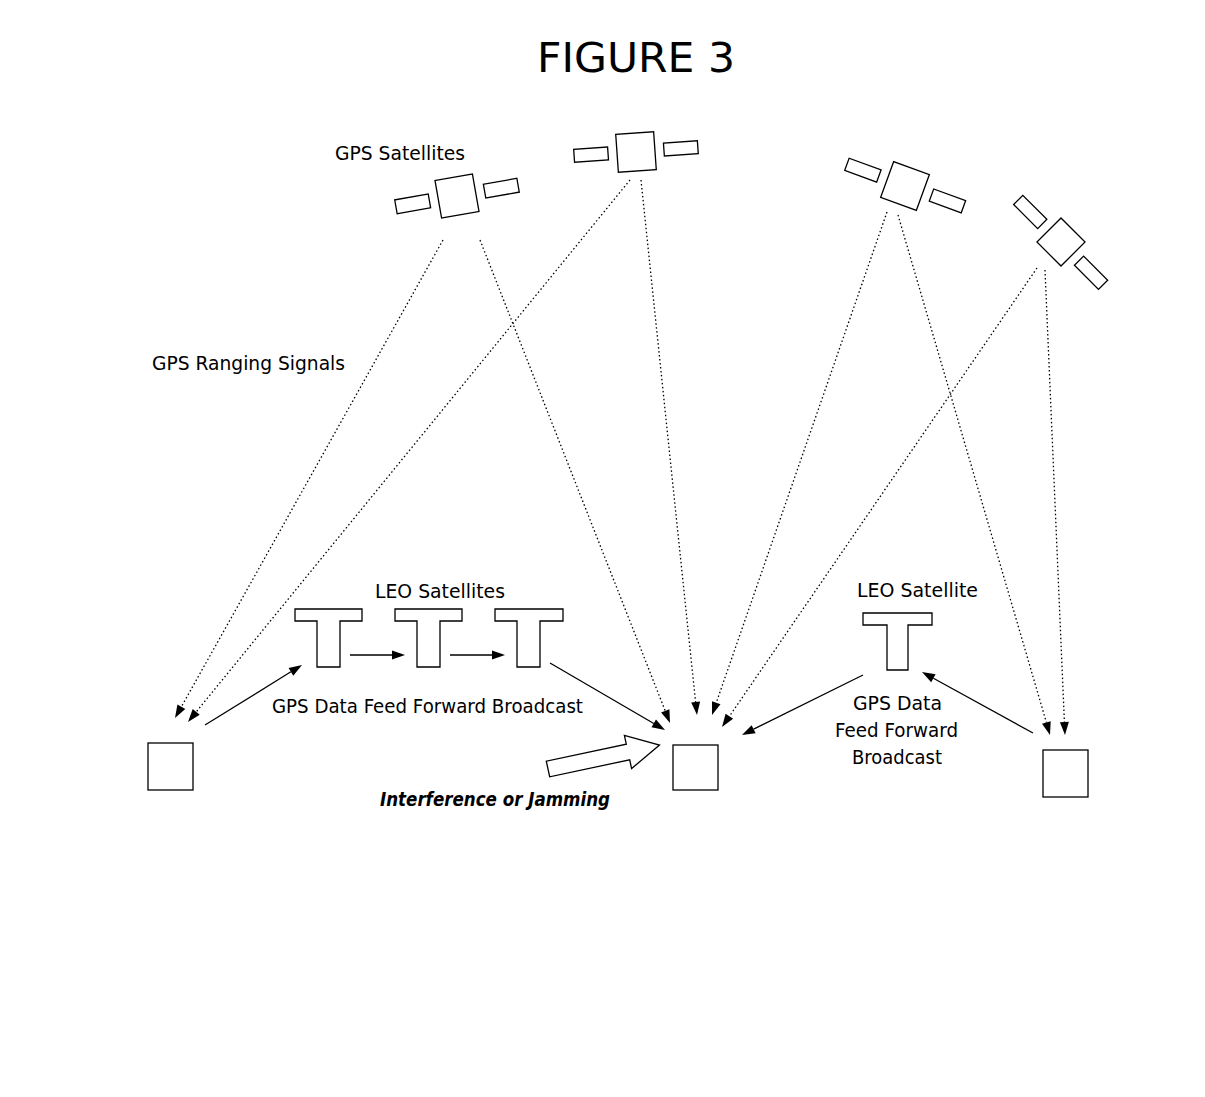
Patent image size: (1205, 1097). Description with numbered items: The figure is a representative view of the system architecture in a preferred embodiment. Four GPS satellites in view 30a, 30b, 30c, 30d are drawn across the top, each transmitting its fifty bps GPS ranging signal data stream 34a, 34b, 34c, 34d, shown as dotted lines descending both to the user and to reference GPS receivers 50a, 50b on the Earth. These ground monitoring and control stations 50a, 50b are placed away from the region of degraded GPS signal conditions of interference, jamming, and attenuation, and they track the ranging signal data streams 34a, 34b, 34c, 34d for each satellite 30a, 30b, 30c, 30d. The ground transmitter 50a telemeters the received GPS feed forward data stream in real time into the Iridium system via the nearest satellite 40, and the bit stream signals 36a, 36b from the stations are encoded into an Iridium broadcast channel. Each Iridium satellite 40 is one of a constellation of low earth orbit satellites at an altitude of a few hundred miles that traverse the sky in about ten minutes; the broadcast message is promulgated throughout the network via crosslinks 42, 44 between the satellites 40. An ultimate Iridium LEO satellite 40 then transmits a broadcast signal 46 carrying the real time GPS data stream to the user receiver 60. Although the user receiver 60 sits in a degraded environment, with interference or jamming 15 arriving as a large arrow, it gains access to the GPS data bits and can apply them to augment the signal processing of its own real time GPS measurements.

The interference 15 is at (548, 769).
The GPS satellite 30a is at (398, 205).
The GPS satellite 30b is at (575, 158).
The GPS satellite 30c is at (848, 172).
The GPS satellite 30d is at (1035, 248).
The GPS ranging signal data stream 34a is at (273, 530).
The GPS ranging signal data stream 34b is at (658, 405).
The GPS ranging signal data stream 34c is at (802, 450).
The GPS ranging signal data stream 34d is at (912, 443).
The bit stream signal 36a is at (245, 700).
The bit stream signal 36b is at (805, 718).
The Iridium satellite 40 is at (540, 614).
The crosslink 42 is at (401, 650).
The crosslink 44 is at (503, 650).
The broadcast signal 46 is at (617, 690).
The reference GPS receiver 50a is at (148, 768).
The reference GPS receiver 50b is at (1043, 782).
The user receiver 60 is at (673, 787).